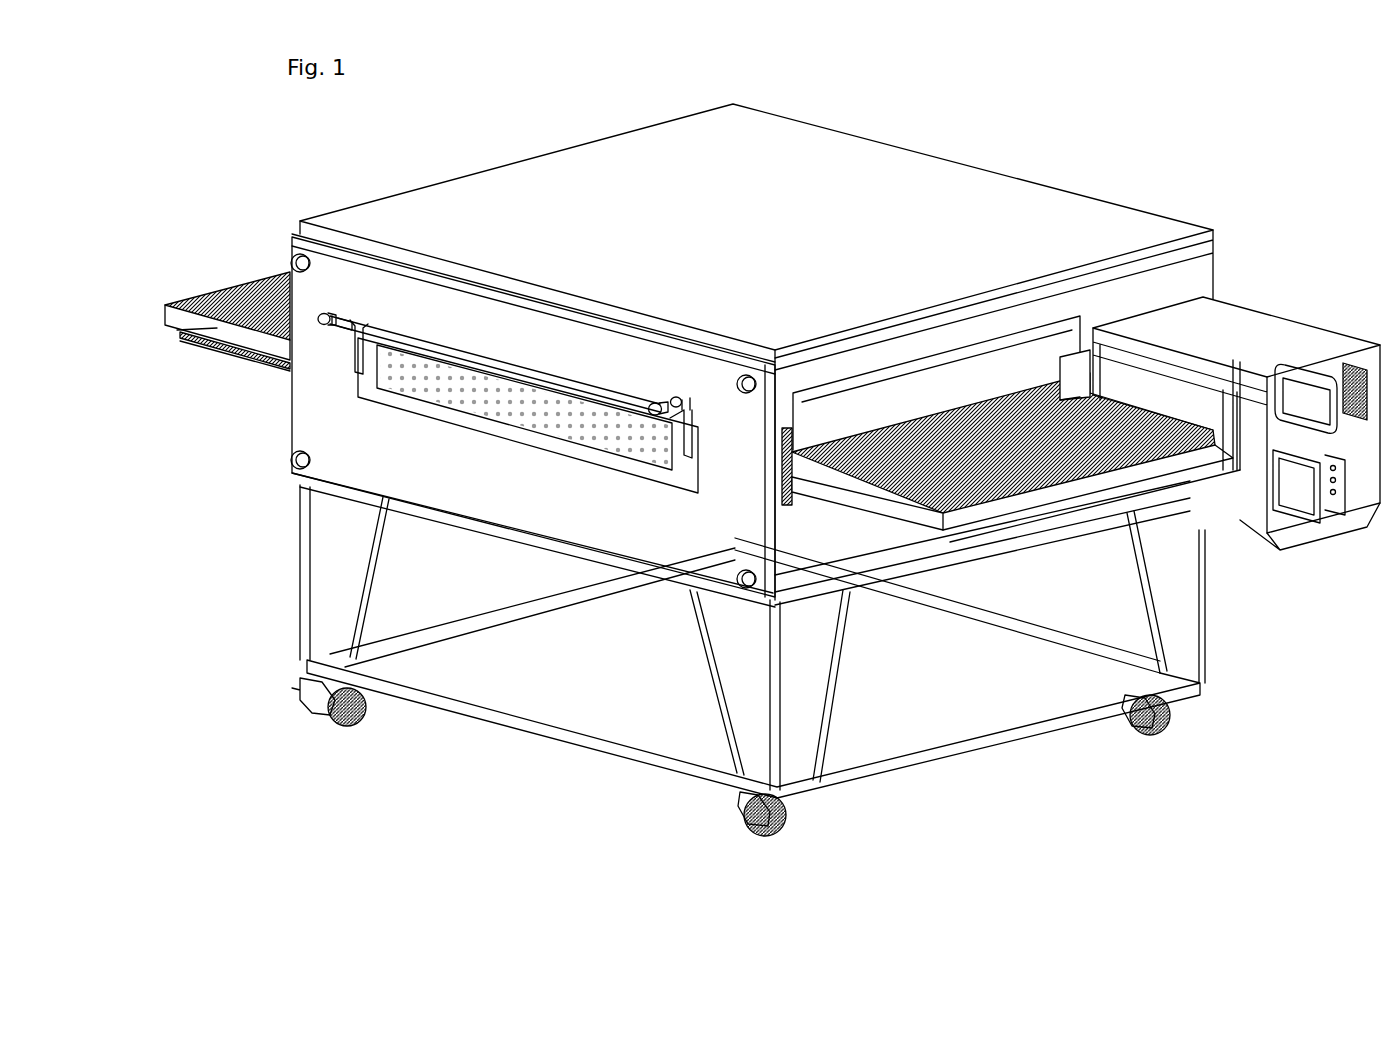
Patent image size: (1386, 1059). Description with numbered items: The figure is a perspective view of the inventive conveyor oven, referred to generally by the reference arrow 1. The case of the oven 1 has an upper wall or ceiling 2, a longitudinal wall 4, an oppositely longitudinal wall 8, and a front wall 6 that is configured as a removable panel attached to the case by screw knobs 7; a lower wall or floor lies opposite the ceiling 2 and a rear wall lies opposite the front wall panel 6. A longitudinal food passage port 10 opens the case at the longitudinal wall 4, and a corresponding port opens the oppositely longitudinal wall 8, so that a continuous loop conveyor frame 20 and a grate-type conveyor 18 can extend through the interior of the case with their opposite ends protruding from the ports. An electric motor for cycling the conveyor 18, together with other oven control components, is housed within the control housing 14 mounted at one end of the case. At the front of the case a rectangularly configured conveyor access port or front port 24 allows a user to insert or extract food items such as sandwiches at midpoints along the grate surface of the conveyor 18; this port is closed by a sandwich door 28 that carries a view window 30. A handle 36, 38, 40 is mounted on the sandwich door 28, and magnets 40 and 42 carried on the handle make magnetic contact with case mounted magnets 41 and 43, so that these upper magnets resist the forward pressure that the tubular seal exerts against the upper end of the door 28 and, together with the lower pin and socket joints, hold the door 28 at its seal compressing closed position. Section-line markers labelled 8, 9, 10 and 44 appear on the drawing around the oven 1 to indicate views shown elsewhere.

The conveyor oven 1 is at (950, 140).
The upper wall or ceiling 2 is at (773, 147).
The longitudinal wall 4 is at (1105, 307).
The front wall 6 is at (307, 483).
The screw knobs 7 is at (290, 457).
The oppositely longitudinal wall 8 is at (368, 176).
The section line 9 is at (528, 212).
The longitudinal food passage port 10 is at (987, 397).
The control housing 14 is at (1255, 333).
The grate-type conveyor 18 is at (253, 300).
The conveyor frame 20 is at (200, 330).
The conveyor access port or front port 24 is at (397, 410).
The sandwich door 28 is at (600, 458).
The view window 30 is at (513, 415).
The handle 36 is at (690, 458).
The handle 38 is at (347, 340).
The magnet 40 is at (680, 397).
The case mounted magnet 41 is at (362, 320).
The magnet 42 is at (345, 312).
The case mounted magnet 43 is at (690, 393).
The handle bar 44 is at (470, 360).